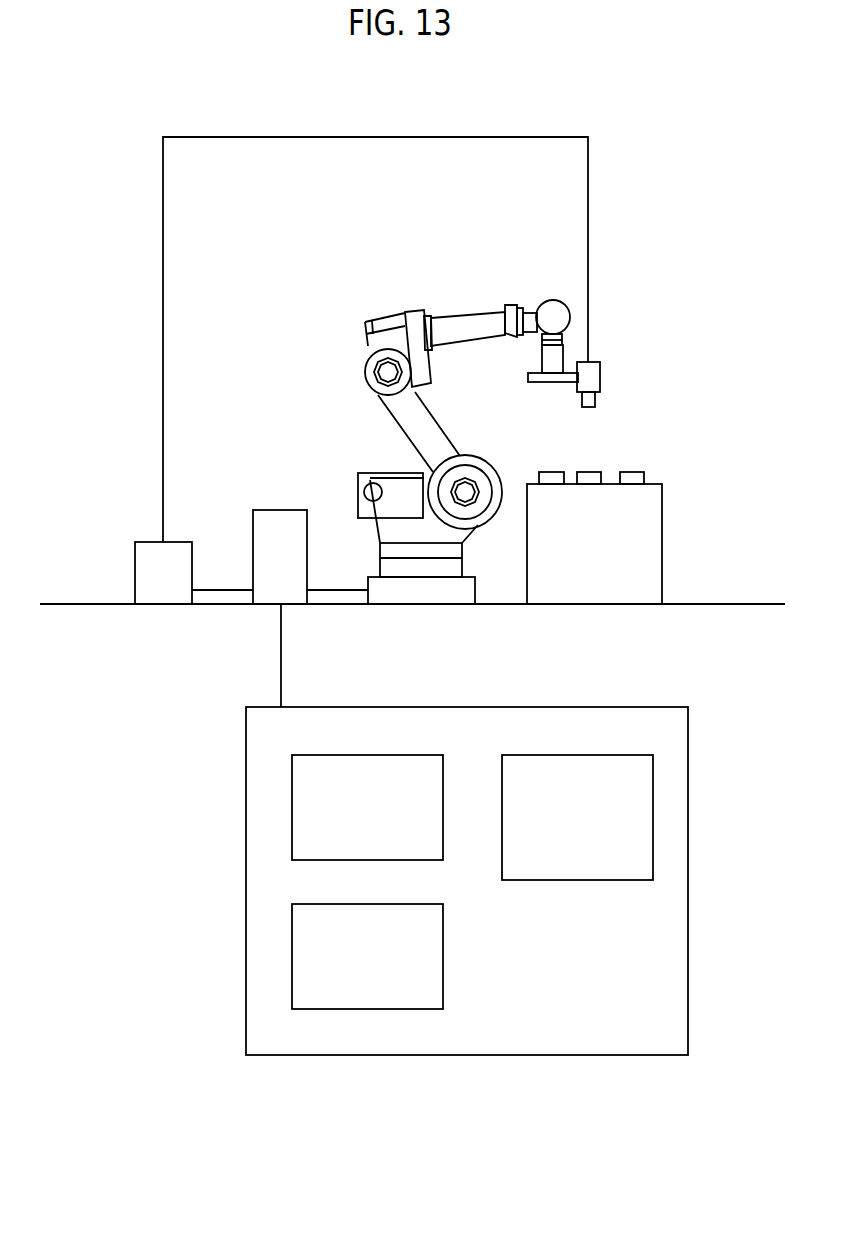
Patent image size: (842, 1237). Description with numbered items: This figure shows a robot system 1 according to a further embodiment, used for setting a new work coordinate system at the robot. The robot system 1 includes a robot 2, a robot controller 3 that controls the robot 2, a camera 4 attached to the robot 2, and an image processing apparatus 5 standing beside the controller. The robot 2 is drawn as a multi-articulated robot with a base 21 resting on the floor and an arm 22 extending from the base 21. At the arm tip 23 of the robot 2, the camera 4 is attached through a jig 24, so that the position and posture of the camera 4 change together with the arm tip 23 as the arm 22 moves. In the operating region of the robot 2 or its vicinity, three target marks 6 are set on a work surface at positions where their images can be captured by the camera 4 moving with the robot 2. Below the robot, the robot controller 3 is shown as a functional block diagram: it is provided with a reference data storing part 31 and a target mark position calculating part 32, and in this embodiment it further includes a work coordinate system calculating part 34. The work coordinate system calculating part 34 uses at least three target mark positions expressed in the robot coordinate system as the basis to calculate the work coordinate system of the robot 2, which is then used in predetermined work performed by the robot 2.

The robot system 1 is at (62, 115).
The robot 2 is at (346, 307).
The robot controller 3 is at (282, 510).
The camera 4 is at (600, 373).
The image processing apparatus 5 is at (138, 542).
The target mark 6 is at (590, 472).
The base 21 is at (448, 592).
The arm 22 is at (455, 317).
The arm tip 23 is at (576, 338).
The jig 24 is at (536, 393).
The reference data storing part 31 is at (292, 778).
The target mark position calculating part 32 is at (292, 928).
The work coordinate system calculating part 34 is at (653, 783).